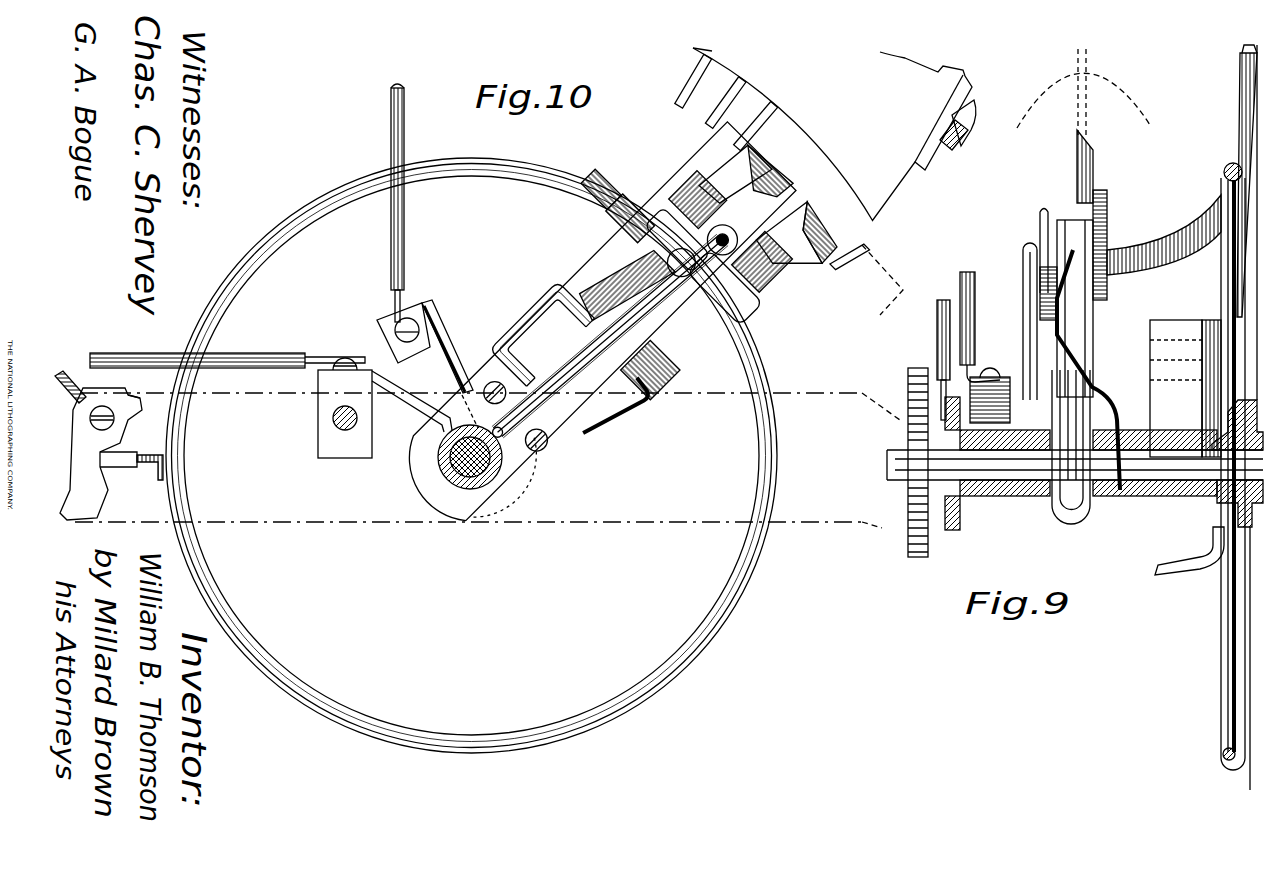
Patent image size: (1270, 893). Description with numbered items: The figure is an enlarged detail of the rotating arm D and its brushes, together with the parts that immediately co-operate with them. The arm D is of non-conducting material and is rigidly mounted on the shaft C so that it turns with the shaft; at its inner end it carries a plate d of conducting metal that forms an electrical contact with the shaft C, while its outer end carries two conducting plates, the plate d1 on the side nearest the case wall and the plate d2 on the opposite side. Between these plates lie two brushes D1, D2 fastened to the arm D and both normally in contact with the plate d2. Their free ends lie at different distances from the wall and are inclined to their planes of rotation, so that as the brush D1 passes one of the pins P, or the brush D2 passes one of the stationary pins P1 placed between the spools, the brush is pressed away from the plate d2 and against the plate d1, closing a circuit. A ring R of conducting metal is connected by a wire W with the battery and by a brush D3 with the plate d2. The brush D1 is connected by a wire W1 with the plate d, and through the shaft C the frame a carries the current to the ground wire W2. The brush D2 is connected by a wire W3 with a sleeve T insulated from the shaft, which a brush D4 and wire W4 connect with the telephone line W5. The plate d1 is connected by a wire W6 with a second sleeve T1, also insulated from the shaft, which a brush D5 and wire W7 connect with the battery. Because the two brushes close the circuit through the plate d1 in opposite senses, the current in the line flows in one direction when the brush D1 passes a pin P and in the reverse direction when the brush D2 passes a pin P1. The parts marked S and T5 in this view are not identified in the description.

In FIG. 10, the wire W is at (112, 492).
In FIG. 9, the wire W is at (1172, 572).
In FIG. 10, the wire W1 is at (514, 318).
In FIG. 10, the ground wire W2 is at (615, 334).
In FIG. 9, the ground wire W2 is at (937, 327).
In FIG. 10, the wire W3 is at (640, 420).
In FIG. 9, the wire W3 is at (1105, 388).
In FIG. 10, the wire W4 is at (406, 152).
In FIG. 9, the wire W4 is at (1243, 125).
In FIG. 10, the telephone line W5 is at (62, 372).
In FIG. 10, the wire W6 is at (688, 365).
In FIG. 9, the wire W6 is at (1023, 330).
In FIG. 10, the wire W7 is at (240, 348).
In FIG. 9, the wire W7 is at (965, 280).
In FIG. 10, the rotating arm D is at (600, 440).
In FIG. 9, the rotating arm D is at (1093, 355).
In FIG. 10, the brush D1 is at (775, 172).
In FIG. 9, the brush D1 is at (1095, 175).
In FIG. 10, the brush D2 is at (822, 228).
In FIG. 9, the brush D2 is at (1040, 215).
In FIG. 10, the brush D3 is at (625, 190).
In FIG. 9, the brush D3 is at (1164, 249).
In FIG. 10, the brush D4 is at (442, 348).
In FIG. 9, the brush D4 is at (1185, 388).
In FIG. 10, the brush D5 is at (412, 415).
In FIG. 10, the plate d is at (466, 520).
In FIG. 9, the plate d is at (1075, 512).
In FIG. 10, the plate d1 is at (770, 285).
In FIG. 9, the plate d1 is at (1107, 218).
In FIG. 10, the plate d2 is at (745, 312).
In FIG. 9, the plate d2 is at (1040, 285).
In FIG. 10, the pins P is at (738, 131).
In FIG. 9, the pins P is at (1076, 140).
In FIG. 10, the stationary pins P1 is at (855, 268).
In FIG. 10, the toothed sector S is at (834, 134).
In FIG. 10, the ring R is at (512, 176).
In FIG. 9, the ring R is at (1224, 172).
In FIG. 10, the shaft C is at (505, 490).
In FIG. 9, the shaft C is at (1012, 498).
In FIG. 9, the sleeve T is at (1163, 500).
In FIG. 10, the second sleeve T1 is at (440, 480).
In FIG. 9, the second sleeve T1 is at (998, 500).
In FIG. 9, the ratchet gear T5 is at (908, 412).
In FIG. 10, the frame a is at (135, 405).
In FIG. 9, the frame a is at (1000, 498).